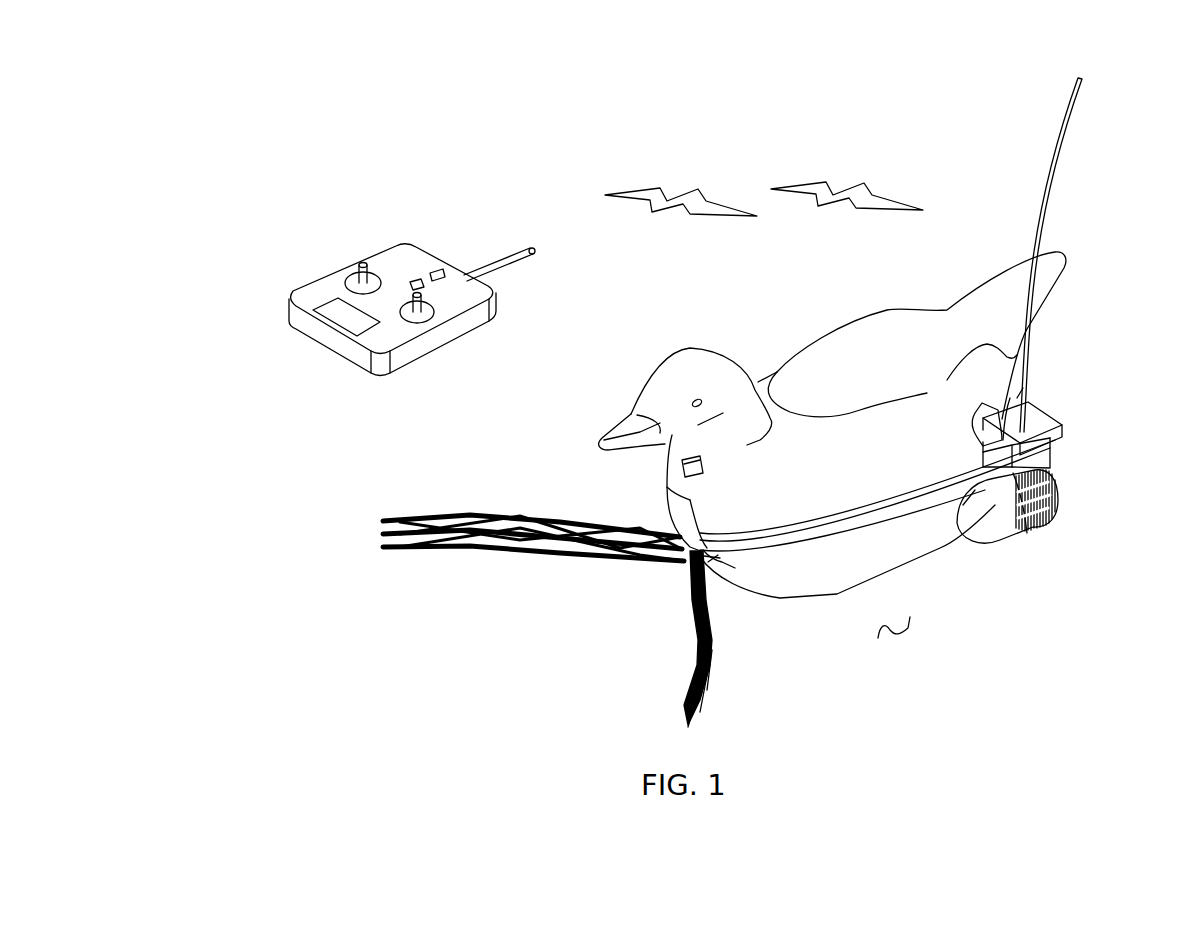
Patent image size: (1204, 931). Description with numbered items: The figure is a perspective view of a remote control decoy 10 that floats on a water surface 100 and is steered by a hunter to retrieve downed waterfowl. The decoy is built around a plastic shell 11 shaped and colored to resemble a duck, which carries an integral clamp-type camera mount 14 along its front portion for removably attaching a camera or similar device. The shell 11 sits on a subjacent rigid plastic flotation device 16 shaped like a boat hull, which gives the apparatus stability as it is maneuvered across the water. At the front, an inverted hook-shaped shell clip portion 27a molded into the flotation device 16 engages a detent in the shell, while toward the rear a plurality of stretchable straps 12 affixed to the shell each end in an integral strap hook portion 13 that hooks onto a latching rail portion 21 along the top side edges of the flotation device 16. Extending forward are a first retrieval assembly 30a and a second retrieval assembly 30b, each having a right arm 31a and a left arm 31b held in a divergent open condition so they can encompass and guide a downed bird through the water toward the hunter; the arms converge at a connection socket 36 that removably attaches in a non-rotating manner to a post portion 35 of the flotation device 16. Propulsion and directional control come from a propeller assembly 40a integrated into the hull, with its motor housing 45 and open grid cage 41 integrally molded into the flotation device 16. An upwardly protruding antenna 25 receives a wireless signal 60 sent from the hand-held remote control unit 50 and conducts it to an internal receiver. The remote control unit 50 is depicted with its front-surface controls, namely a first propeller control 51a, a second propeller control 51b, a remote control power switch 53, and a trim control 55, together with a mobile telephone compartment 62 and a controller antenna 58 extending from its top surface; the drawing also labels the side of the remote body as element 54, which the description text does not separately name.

The remote control decoy 10 is at (1098, 296).
The plastic shell 11 is at (884, 320).
The straps 12 is at (995, 432).
The strap hook portion 13 is at (1000, 453).
The clamp-type camera mount 14 is at (698, 432).
The flotation device 16 is at (1028, 462).
The latching rail portion 21 is at (890, 512).
The antenna 25 is at (1053, 175).
The shell clip portion 27a is at (690, 523).
The first retrieval assembly 30a is at (557, 622).
The second retrieval assembly 30b is at (631, 638).
The right arm 31a is at (716, 672).
The left arm 31b is at (415, 555).
The post portion 35 is at (713, 567).
The connection socket 36 is at (776, 606).
The propeller assembly 40a is at (1001, 546).
The open grid cage 41 is at (1050, 518).
The motor housing 45 is at (1003, 524).
The remote control unit 50 is at (286, 205).
The first propeller control 51a is at (368, 270).
The second propeller control 51b is at (421, 316).
The remote control power switch 53 is at (446, 277).
The controller housing 54 is at (307, 331).
The trim control 55 is at (424, 287).
The controller antenna 58 is at (500, 257).
The wireless signal 60 is at (806, 190).
The mobile telephone compartment 62 is at (344, 331).
The water surface 100 is at (905, 640).